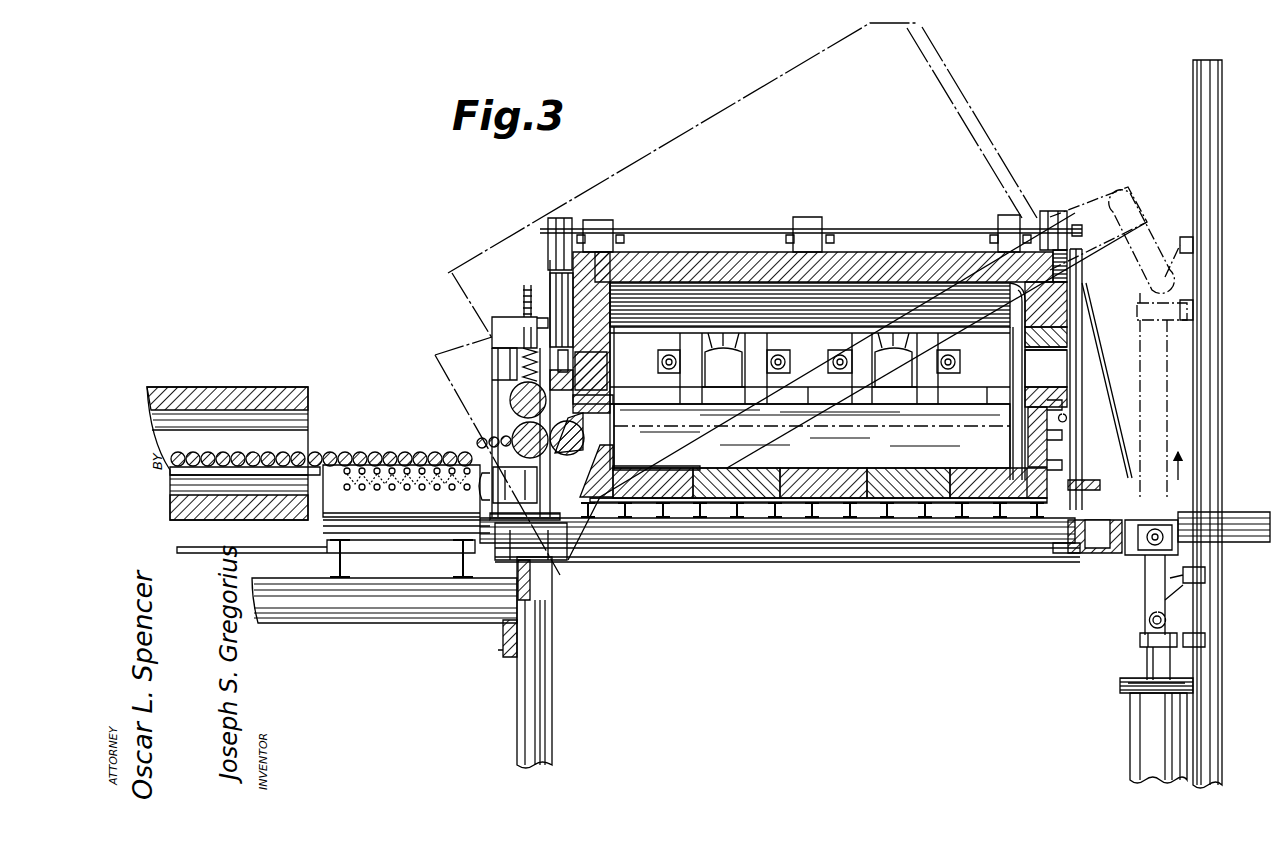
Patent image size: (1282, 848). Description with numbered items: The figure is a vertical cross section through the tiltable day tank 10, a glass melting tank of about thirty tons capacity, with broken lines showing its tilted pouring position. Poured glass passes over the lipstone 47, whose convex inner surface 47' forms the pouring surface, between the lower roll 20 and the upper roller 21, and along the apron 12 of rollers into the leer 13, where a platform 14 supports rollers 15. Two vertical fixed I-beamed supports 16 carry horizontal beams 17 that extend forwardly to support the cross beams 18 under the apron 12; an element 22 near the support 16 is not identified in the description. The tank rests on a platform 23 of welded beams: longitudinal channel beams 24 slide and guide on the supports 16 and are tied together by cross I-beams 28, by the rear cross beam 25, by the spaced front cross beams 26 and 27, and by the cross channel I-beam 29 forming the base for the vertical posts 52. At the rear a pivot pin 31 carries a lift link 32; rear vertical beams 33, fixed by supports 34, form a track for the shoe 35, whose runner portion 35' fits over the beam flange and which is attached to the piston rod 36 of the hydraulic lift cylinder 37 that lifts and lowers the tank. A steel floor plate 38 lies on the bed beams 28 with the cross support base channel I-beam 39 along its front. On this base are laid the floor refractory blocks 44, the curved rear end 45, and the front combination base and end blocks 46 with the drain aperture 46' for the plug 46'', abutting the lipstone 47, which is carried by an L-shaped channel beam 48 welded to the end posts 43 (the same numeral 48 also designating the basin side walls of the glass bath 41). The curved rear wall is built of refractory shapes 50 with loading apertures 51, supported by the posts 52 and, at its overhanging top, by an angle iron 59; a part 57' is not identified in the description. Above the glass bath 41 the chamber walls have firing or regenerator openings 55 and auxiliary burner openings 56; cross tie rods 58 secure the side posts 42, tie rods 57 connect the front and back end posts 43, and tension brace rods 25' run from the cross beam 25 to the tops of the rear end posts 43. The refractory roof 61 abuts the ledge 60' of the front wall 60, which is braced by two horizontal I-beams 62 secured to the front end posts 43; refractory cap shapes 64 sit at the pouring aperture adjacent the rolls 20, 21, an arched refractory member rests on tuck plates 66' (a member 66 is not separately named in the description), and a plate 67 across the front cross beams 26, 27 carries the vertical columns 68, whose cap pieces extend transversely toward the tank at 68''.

The day tank 10 is at (722, 106).
The apron of rollers 12 is at (392, 455).
The leer 13 is at (230, 386).
The platform 14 is at (290, 466).
The rollers 15 is at (244, 456).
The vertical fixed I-beamed supports 16 is at (517, 709).
The horizontal beams 17 is at (333, 622).
The cross beams 18 is at (332, 560).
The lower roll 20 is at (512, 440).
The upper roller 21 is at (510, 396).
The column bracket 22 is at (530, 598).
The day tank platform 23 is at (835, 565).
The longitudinal channel beams 24 is at (666, 552).
The cross beam 25 is at (1095, 522).
The tension brace rods 25' is at (1107, 380).
The cross beam 26 is at (478, 533).
The cross beam 27 is at (552, 542).
The cross I-beams 28 is at (792, 530).
The cross channel I-beam 29 is at (1058, 556).
The pivot pin 31 is at (1156, 528).
The lift link 32 is at (1145, 575).
The rear vertical beams 33 is at (1252, 308).
The supports 34 is at (1250, 512).
The shoe 35 is at (1134, 636).
The runner portion 35' is at (1209, 600).
The piston rod 36 is at (1147, 668).
The hydraulic lift cylinder 37 is at (1130, 722).
The floor plate 38 is at (920, 484).
The cross support base channel I-beam 39 is at (588, 540).
The glass bath 41 is at (812, 436).
The posts 42 is at (618, 196).
The end posts 43 is at (560, 218).
The floor refractory blocks 44 is at (786, 470).
The curved rear end 45 is at (1028, 432).
The front end combination base and end blocks 46 is at (609, 470).
The drain aperture 46' is at (606, 511).
The plug 46'' is at (656, 450).
The lipstone 47 is at (595, 438).
The convex inner surface 47' is at (599, 429).
The basin side wall 48 is at (946, 432).
The rear refractory shapes 50 is at (1012, 334).
The loading apertures 51 is at (1046, 368).
The vertical posts 52 is at (1082, 492).
The firing ports 55 is at (809, 368).
The auxiliary burner openings 56 is at (786, 358).
The tie rods 57 is at (811, 219).
The end clips 57' is at (1053, 435).
The cross tie rods 58 is at (786, 238).
The angle iron 59 is at (1068, 418).
The front wall 60 is at (631, 376).
The ledge 60' is at (810, 307).
The refractory roof 61 is at (680, 252).
The horizontal I-beams 62 is at (552, 280).
The top refractory shapes 64 is at (612, 378).
The sealing block 66 is at (572, 388).
The tuck plates 66' is at (603, 399).
The plate 67 is at (480, 500).
The vertical columns 68 is at (521, 390).
The transversely extending parts 68'' is at (512, 308).